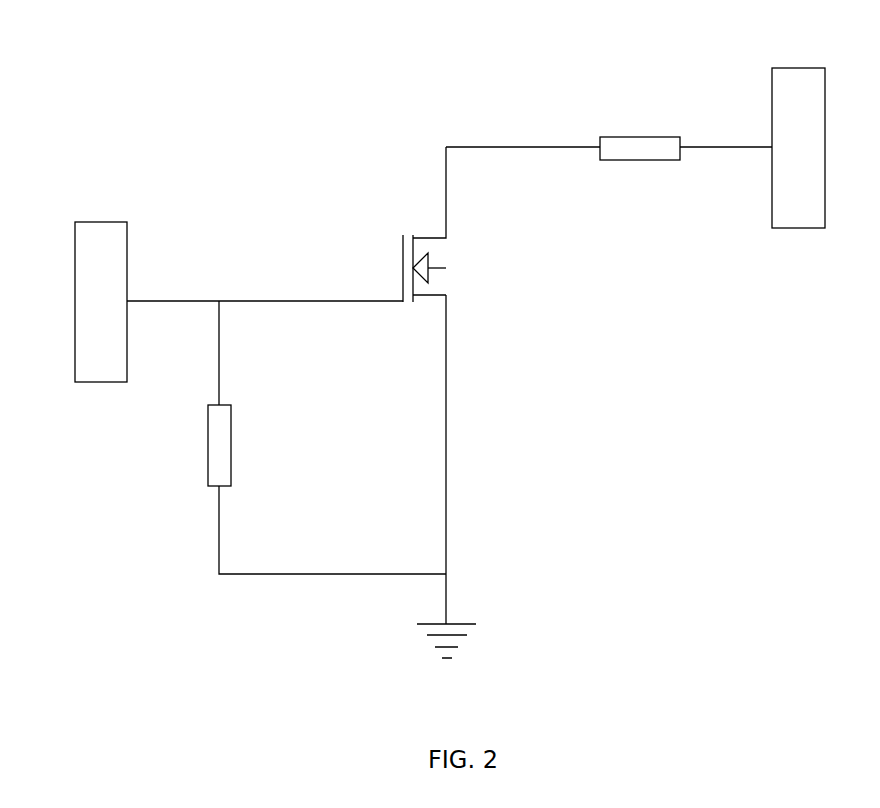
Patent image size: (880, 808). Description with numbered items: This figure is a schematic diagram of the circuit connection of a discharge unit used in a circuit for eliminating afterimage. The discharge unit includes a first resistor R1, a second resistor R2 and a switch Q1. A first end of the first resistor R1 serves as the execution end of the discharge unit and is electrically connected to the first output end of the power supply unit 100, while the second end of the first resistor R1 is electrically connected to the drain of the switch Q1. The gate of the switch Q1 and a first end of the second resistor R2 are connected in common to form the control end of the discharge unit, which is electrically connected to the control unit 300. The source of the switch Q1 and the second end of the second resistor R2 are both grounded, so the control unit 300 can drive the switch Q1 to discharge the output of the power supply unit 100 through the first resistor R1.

The power supply unit 100 is at (805, 67).
The control unit 300 is at (112, 222).
The first resistor R1 is at (640, 172).
The second resistor R2 is at (239, 445).
The switch Q1 is at (429, 245).